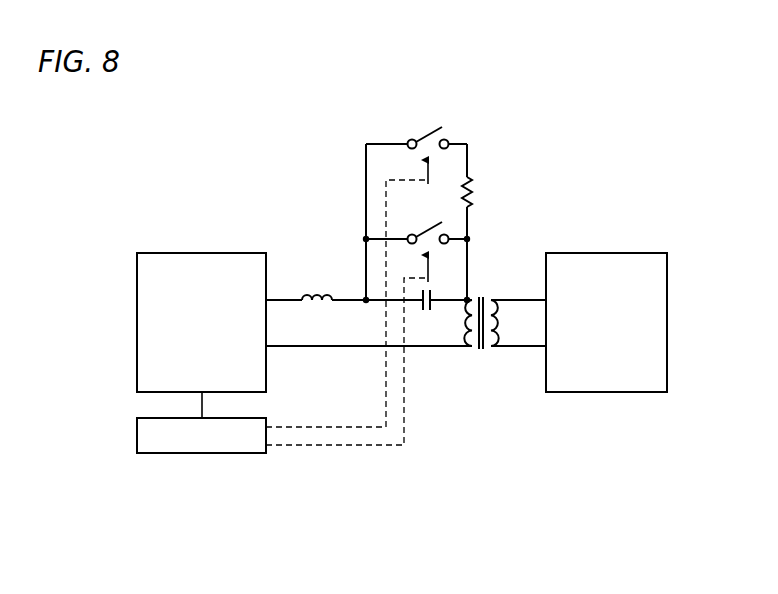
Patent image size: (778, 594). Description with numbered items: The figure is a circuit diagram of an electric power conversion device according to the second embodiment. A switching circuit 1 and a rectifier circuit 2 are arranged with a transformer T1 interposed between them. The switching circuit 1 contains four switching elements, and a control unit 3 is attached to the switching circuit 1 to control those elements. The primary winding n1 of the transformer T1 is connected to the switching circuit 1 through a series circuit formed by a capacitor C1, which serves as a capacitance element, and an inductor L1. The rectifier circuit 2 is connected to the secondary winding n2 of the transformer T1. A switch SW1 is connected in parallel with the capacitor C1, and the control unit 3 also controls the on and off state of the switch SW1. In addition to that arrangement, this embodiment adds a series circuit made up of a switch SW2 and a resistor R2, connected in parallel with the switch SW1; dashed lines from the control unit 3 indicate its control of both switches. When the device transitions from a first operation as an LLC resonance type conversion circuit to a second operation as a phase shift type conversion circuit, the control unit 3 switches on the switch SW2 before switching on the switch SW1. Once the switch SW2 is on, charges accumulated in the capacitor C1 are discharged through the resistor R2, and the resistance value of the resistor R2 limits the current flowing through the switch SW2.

The switching circuit 1 is at (200, 258).
The rectifier circuit 2 is at (607, 258).
The control unit 3 is at (205, 455).
The inductor L1 is at (317, 281).
The capacitor C1 is at (442, 289).
The resistor R2 is at (485, 194).
The switch SW1 is at (420, 221).
The switch SW2 is at (419, 123).
The transformer T1 is at (481, 339).
The primary winding n1 is at (454, 323).
The secondary winding n2 is at (508, 323).